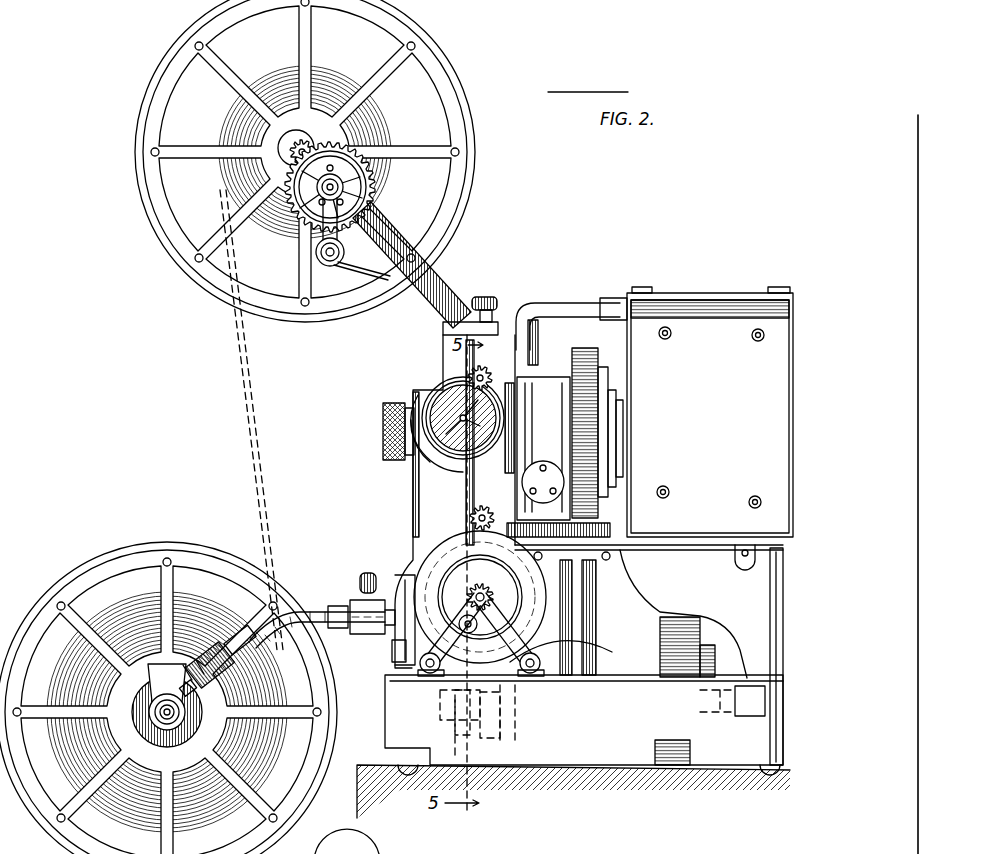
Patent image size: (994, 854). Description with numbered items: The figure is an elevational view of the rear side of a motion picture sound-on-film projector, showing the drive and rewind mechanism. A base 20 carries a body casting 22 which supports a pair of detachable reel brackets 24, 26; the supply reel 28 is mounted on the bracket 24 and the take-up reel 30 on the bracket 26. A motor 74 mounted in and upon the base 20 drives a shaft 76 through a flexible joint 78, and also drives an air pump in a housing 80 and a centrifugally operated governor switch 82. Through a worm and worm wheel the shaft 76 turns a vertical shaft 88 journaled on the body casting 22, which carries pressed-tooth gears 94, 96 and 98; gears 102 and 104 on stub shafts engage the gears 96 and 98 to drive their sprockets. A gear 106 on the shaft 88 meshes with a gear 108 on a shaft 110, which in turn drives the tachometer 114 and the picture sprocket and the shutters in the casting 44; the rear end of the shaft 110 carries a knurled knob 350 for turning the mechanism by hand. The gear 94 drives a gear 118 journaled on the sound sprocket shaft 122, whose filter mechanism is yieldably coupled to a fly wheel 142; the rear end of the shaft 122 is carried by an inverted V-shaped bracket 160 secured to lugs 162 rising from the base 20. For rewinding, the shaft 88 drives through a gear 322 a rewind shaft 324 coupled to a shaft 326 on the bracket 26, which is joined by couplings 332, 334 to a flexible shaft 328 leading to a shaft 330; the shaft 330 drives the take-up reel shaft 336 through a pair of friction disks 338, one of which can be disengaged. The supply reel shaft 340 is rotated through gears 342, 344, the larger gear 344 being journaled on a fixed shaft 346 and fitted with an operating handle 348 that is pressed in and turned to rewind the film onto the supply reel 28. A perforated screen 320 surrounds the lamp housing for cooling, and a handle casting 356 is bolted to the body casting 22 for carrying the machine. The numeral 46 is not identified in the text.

The base 20 is at (548, 745).
The body casting 22 is at (775, 650).
The reel bracket 24 is at (447, 284).
The reel bracket 26 is at (380, 575).
The supply reel 28 is at (470, 196).
The take-up reel 30 is at (100, 553).
The casting 44 is at (582, 345).
The bracket 46 is at (620, 292).
The motor 74 is at (616, 745).
The shaft 76 is at (470, 720).
The flexible joint 78 is at (498, 725).
The housing 80 is at (690, 752).
The governor switch 82 is at (740, 718).
The vertical shaft 88 is at (445, 482).
The gear 94 is at (410, 575).
The gear 96 is at (470, 505).
The gear 98 is at (455, 372).
The gear 102 is at (485, 508).
The gear 104 is at (478, 372).
The gear 106 is at (540, 395).
The gear 108 is at (432, 462).
The shaft 110 is at (510, 456).
The tachometer 114 is at (430, 402).
The gear 118 is at (480, 597).
The shaft 122 is at (500, 597).
The fly wheel 142 is at (540, 585).
The inverted V-shaped bracket 160 is at (545, 650).
The lugs 162 is at (545, 685).
The perforated screen 320 is at (730, 290).
The gear 322 is at (484, 634).
The rewind shaft 324 is at (377, 664).
The shaft 326 is at (338, 606).
The flexible shaft 328 is at (283, 612).
The shaft 330 is at (180, 665).
The coupling 332 is at (360, 634).
The coupling 334 is at (232, 632).
The take-up reel shaft 336 is at (170, 725).
The friction disks 338 is at (190, 700).
The supply reel shaft 340 is at (296, 153).
The gear 342 is at (318, 138).
The gear 344 is at (362, 166).
The fixed shaft 346 is at (345, 190).
The operating handle 348 is at (324, 265).
The knurled knob 350 is at (383, 430).
The handle casting 356 is at (540, 298).